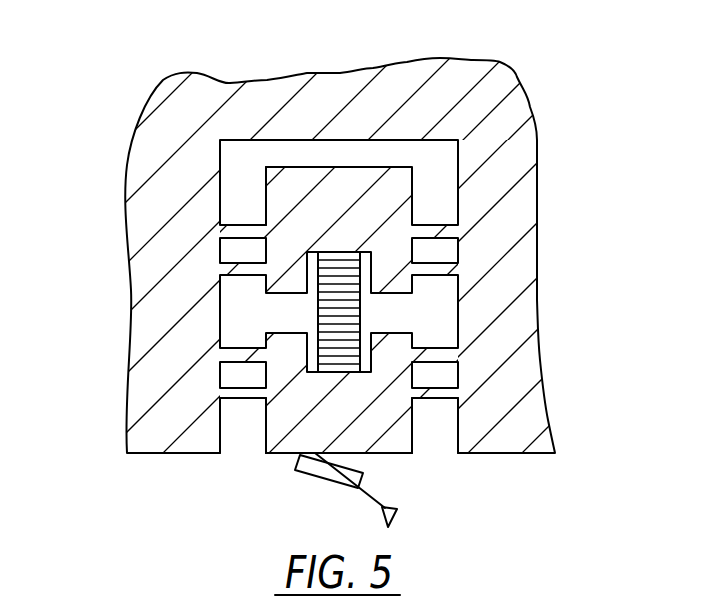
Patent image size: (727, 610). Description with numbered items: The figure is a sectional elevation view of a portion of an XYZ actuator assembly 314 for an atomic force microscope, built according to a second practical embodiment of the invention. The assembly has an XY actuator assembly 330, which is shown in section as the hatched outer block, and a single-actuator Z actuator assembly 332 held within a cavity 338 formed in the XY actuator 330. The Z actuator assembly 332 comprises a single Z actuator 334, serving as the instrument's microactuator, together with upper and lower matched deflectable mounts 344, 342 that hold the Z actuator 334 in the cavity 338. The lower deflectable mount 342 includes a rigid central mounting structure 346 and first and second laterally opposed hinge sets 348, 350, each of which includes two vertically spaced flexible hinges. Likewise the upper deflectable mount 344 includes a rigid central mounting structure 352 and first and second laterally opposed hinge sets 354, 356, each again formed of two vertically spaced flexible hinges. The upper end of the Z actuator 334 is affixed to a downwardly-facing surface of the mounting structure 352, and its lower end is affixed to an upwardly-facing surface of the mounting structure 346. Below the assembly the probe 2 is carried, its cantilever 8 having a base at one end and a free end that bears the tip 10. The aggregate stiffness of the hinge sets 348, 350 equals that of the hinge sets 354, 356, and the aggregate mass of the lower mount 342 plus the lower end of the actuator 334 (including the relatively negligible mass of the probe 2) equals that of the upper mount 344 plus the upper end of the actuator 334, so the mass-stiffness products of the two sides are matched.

The probe 2 is at (333, 487).
The cantilever 8 is at (376, 501).
The tip 10 is at (398, 516).
The XYZ actuator assembly 314 is at (666, 109).
The XY actuator assembly 330 is at (550, 199).
The Z actuator assembly 332 is at (438, 296).
The Z actuator 334 is at (318, 313).
The cavity 338 is at (222, 447).
The lower deflectable mount 342 is at (266, 454).
The upper deflectable mount 344 is at (264, 186).
The rigid central mounting structure 346 is at (400, 451).
The first hinge set 348 is at (233, 348).
The second hinge set 350 is at (448, 388).
The rigid central mounting structure 352 is at (390, 167).
The first hinge set 354 is at (232, 223).
The second hinge set 356 is at (447, 262).